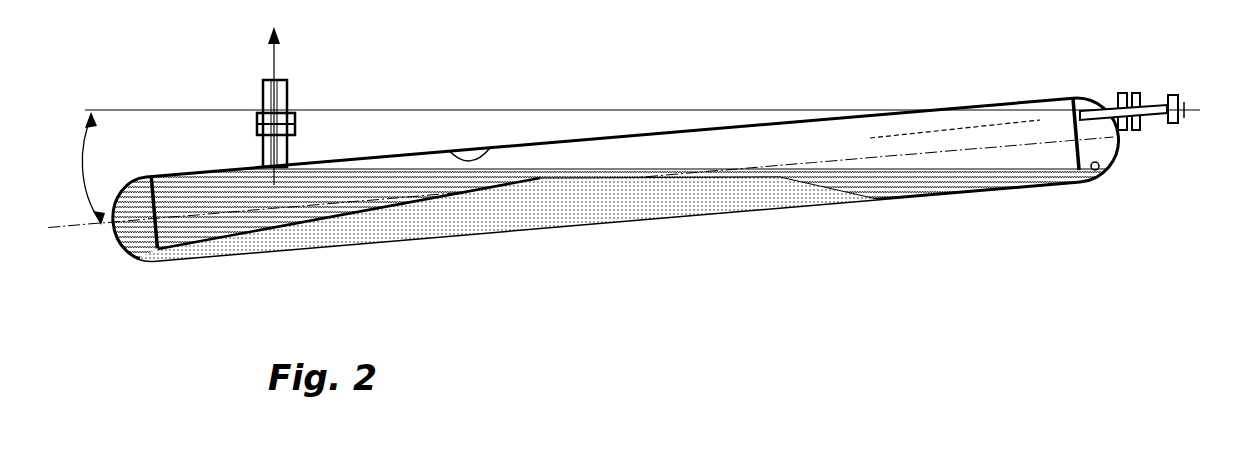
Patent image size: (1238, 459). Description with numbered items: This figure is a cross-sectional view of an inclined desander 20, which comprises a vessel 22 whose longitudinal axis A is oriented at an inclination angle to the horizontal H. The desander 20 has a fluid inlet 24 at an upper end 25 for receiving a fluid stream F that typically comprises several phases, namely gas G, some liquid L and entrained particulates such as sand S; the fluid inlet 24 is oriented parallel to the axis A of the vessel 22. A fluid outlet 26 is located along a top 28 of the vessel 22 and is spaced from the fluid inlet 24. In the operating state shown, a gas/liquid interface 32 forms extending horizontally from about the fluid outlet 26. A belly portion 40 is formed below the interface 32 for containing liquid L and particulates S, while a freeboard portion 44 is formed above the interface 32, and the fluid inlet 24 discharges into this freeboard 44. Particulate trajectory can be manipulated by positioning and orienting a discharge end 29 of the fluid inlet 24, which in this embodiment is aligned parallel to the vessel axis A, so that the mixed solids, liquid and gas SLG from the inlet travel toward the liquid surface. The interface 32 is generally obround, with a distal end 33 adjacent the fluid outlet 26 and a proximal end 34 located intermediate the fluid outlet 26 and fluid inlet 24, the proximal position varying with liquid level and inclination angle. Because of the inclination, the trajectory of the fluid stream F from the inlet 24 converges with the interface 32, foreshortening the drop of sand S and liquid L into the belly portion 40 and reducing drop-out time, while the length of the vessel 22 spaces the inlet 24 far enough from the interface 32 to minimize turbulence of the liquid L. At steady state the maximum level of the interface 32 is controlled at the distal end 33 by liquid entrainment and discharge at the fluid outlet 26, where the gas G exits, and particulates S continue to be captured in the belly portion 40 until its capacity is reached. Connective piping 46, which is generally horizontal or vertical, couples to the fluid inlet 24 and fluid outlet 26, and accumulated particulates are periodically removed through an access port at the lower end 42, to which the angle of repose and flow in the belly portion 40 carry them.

The inclined desander 20 is at (646, 191).
The vessel 22 is at (530, 143).
The fluid inlet 24 is at (1120, 93).
The upper end 25 is at (1113, 165).
The fluid outlet 26 is at (260, 163).
The top 28 is at (447, 150).
The discharge end 29 is at (1043, 118).
The gas/liquid interface 32 is at (878, 167).
The distal end 33 is at (343, 167).
The proximal end 34 is at (1100, 172).
The belly portion 40 is at (503, 210).
The lower end 42 is at (120, 247).
The freeboard portion 44 is at (673, 150).
The connective piping 46 is at (1215, 110).
The horizontal H is at (120, 108).
The longitudinal axis A is at (68, 230).
The gas G is at (274, 65).
The liquid L is at (210, 207).
The particulates S is at (593, 210).
The fluid stream F is at (1163, 96).
The fluid stream phases SLG is at (998, 162).